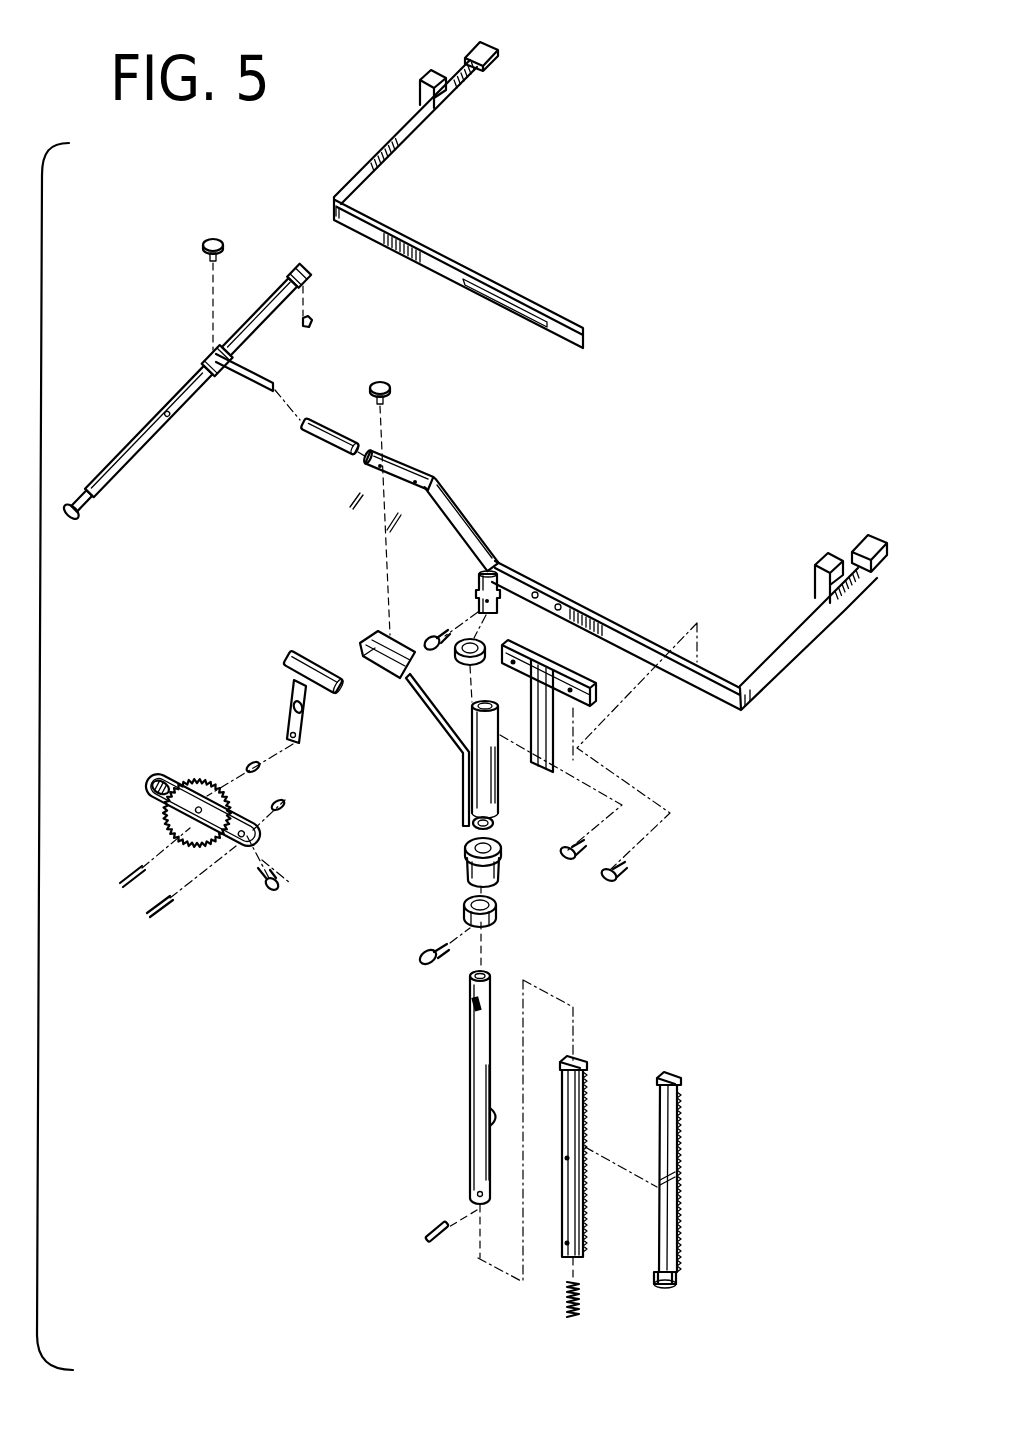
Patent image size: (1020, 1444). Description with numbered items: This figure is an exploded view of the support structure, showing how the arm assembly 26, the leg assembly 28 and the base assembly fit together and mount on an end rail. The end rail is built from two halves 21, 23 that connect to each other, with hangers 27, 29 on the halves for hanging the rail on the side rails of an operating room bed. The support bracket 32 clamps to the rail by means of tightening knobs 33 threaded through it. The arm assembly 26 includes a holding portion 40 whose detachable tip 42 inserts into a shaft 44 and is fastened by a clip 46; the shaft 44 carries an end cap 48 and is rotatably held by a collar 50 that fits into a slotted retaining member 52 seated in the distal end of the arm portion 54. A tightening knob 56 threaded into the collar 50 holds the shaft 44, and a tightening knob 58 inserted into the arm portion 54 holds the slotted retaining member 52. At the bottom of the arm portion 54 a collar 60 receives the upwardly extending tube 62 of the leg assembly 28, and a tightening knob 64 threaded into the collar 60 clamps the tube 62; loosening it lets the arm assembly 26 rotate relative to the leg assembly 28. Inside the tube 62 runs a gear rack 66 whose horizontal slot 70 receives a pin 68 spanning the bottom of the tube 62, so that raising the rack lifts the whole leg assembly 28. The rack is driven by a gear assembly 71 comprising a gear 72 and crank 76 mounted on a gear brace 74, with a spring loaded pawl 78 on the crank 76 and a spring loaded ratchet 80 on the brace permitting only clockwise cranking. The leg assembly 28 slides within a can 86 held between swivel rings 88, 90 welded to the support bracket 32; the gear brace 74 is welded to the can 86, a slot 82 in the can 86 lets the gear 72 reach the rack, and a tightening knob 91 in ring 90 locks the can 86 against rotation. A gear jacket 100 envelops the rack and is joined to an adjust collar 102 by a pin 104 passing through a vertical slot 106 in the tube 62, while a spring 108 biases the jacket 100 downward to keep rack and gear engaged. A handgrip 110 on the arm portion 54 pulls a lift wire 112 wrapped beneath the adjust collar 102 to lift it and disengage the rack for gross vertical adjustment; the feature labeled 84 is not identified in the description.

The end rail half 21 is at (458, 191).
The end rail half 23 is at (689, 606).
The arm assembly 26 is at (436, 488).
The hanger 27 is at (430, 73).
The leg assembly 28 is at (628, 976).
The hanger 29 is at (820, 555).
The support bracket 32 is at (565, 660).
The tightening knobs 33 is at (566, 860).
The holding portion 40 is at (197, 378).
The detachable tip 42 is at (303, 265).
The shaft 44 is at (160, 430).
The clip 46 is at (312, 324).
The end cap 48 is at (75, 525).
The collar 50 is at (210, 352).
The slotted retaining member 52 is at (330, 428).
The arm portion 54 is at (470, 520).
The tightening knob 56 is at (220, 232).
The tightening knob 58 is at (386, 376).
The collar 60 is at (475, 590).
The tube 62 is at (453, 1114).
The tightening knob 64 is at (432, 636).
The gear rack 66 is at (693, 1201).
The pin 68 is at (432, 1228).
The horizontal slot 70 is at (662, 1290).
The gear assembly 71 is at (157, 780).
The gear 72 is at (207, 785).
The gear brace 74 is at (188, 808).
The crank 76 is at (276, 704).
The spring loaded pawl 78 is at (293, 708).
The spring loaded ratchet 80 is at (275, 890).
The slot 82 is at (498, 770).
The bump 84 is at (490, 1120).
The can 86 is at (496, 820).
The swivel ring 88 is at (484, 645).
The swivel ring 90 is at (498, 915).
The tightening knob 91 is at (424, 952).
The gear jacket 100 is at (591, 1138).
The adjust collar 102 is at (465, 860).
The pin 104 is at (556, 1085).
The slot 106 is at (470, 1005).
The spring 108 is at (565, 1302).
The handgrip 110 is at (382, 668).
The lift wire 112 is at (444, 735).